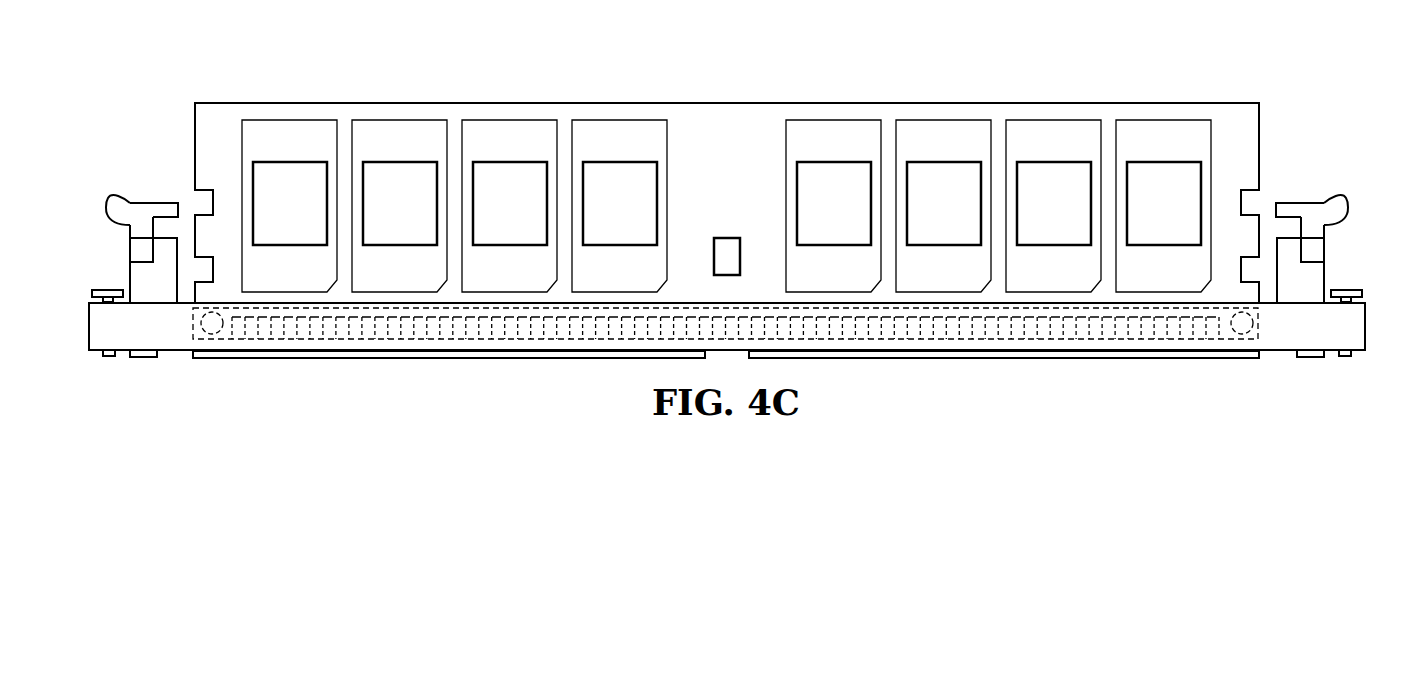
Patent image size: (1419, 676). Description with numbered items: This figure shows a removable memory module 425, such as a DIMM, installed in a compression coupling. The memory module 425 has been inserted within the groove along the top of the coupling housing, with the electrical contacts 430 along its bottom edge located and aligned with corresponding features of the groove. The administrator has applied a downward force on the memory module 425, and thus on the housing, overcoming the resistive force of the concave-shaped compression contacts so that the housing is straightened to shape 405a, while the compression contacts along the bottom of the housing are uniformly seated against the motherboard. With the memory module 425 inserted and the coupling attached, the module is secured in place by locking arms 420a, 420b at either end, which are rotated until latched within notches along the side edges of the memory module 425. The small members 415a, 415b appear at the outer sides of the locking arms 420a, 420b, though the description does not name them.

The memory module connector/socket 405a is at (173, 342).
The first latch button 415a is at (110, 287).
The second latch button 415b is at (1345, 287).
The first ejector latch 420a is at (142, 202).
The second ejector latch 420b is at (1310, 202).
The memory chips 425 is at (288, 130).
The connector pins 430 is at (318, 320).